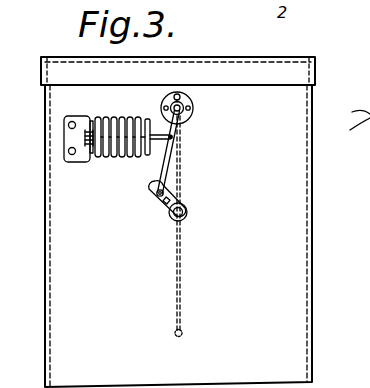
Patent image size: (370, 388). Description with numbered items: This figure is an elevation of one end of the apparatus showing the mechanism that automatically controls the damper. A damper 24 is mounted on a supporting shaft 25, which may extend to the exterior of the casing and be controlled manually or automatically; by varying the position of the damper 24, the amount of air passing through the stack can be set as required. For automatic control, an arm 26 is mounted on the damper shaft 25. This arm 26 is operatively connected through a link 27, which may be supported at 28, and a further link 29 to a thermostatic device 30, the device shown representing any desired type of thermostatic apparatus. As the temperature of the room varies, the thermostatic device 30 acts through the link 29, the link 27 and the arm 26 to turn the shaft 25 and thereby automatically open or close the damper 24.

The damper 24 is at (176, 258).
The supporting shaft 25 is at (187, 209).
The arm 26 is at (149, 187).
The link 27 is at (164, 160).
The support 28 is at (194, 106).
The link 29 is at (159, 114).
The thermostatic device 30 is at (106, 119).